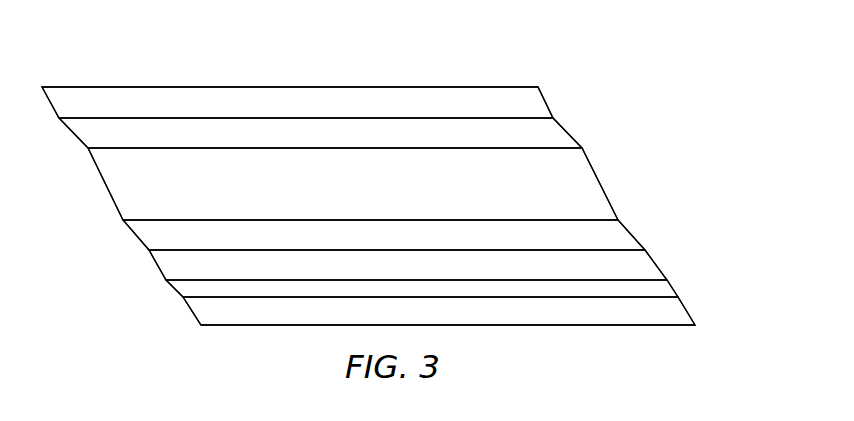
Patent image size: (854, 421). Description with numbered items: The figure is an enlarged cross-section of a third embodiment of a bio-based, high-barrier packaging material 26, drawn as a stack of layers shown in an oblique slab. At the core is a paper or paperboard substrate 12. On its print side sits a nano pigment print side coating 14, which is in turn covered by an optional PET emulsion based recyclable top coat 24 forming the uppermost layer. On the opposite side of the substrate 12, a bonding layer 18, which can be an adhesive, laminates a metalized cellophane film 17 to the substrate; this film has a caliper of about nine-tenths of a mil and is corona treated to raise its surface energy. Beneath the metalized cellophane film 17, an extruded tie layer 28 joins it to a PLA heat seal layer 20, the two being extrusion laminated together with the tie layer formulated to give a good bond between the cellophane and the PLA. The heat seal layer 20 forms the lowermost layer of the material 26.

The bio-based, high-barrier packaging material 26 is at (529, 56).
The PET emulsion based recyclable top coat 24 is at (520, 102).
The nano pigment print side coating 14 is at (547, 133).
The paper or paperboard substrate 12 is at (580, 183).
The bonding layer 18 is at (610, 234).
The metalized cellophane film 17 is at (628, 264).
The extruded tie layer 28 is at (647, 287).
The PLA heat seal layer 20 is at (665, 311).